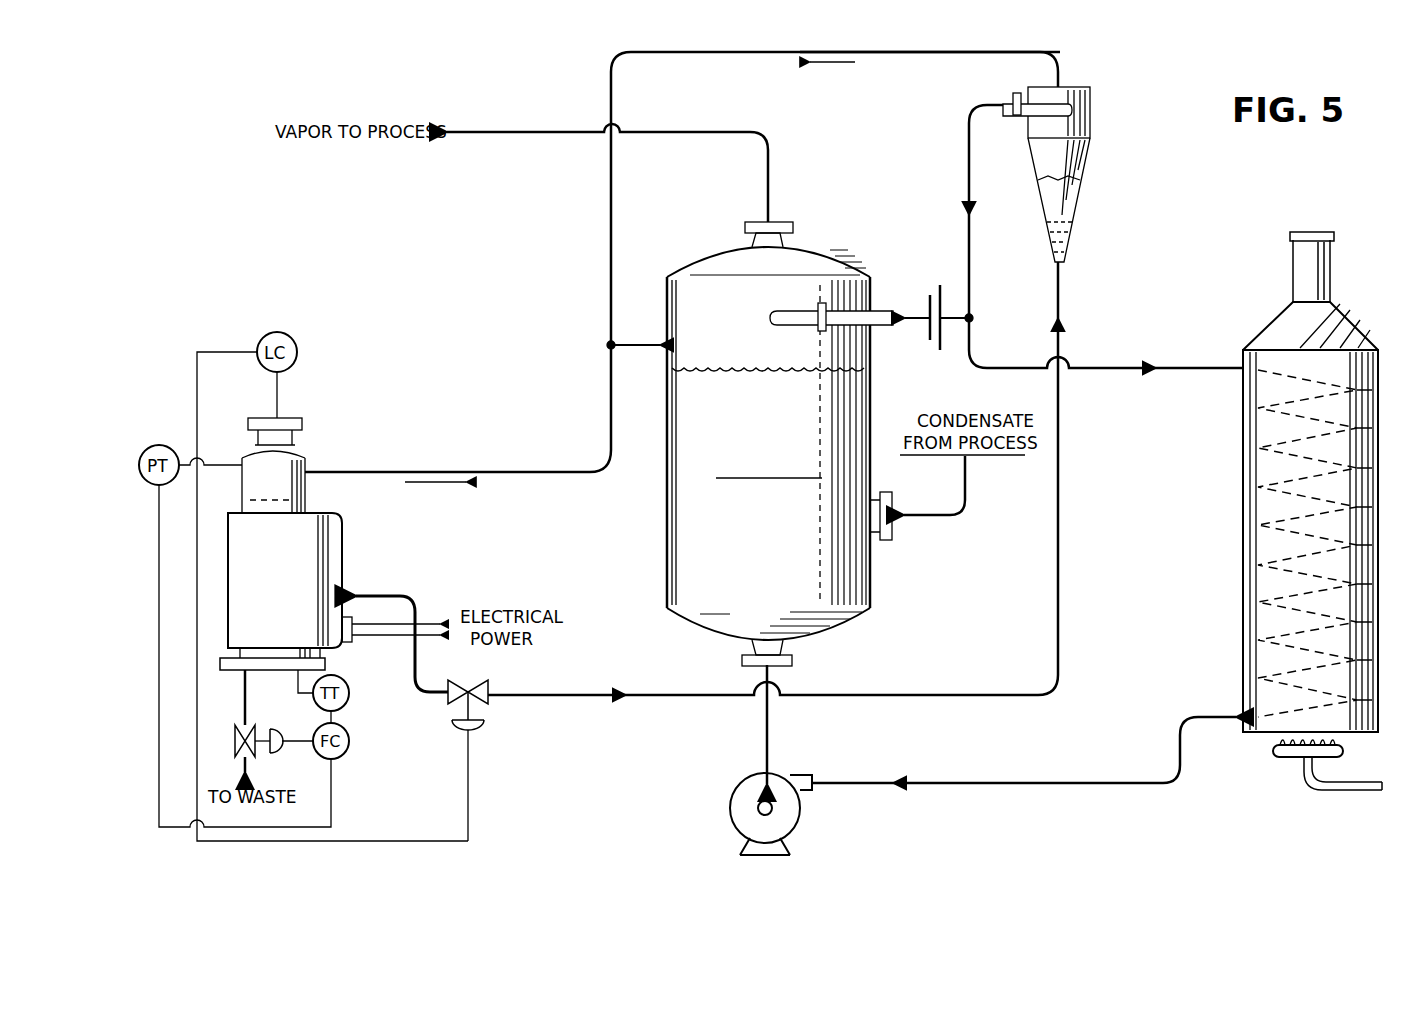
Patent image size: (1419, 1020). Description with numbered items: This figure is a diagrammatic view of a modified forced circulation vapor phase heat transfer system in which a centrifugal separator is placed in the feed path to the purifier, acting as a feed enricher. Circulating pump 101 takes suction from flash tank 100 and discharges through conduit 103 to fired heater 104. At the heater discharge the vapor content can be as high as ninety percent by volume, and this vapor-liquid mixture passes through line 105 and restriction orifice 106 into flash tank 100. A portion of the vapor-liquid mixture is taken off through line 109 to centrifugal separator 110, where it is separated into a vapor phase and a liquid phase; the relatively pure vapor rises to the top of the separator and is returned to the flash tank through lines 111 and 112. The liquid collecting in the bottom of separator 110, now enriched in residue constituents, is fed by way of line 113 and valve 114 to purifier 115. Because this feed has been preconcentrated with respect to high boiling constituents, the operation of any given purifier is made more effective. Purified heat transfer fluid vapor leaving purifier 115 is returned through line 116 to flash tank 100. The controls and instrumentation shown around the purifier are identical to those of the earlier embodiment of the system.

The flash tank 100 is at (784, 511).
The circulating pump 101 is at (742, 806).
The conduit 103 is at (1008, 786).
The fired heater 104 is at (1243, 533).
The line 105 is at (1103, 366).
The restriction orifice 106 is at (935, 292).
The line 109 is at (969, 156).
The centrifugal separator 110 is at (1088, 157).
The line 111 is at (945, 55).
The line 112 is at (632, 345).
The line 113 is at (1060, 554).
The valve 114 is at (486, 701).
The purifier 115 is at (306, 463).
The line 116 is at (563, 470).